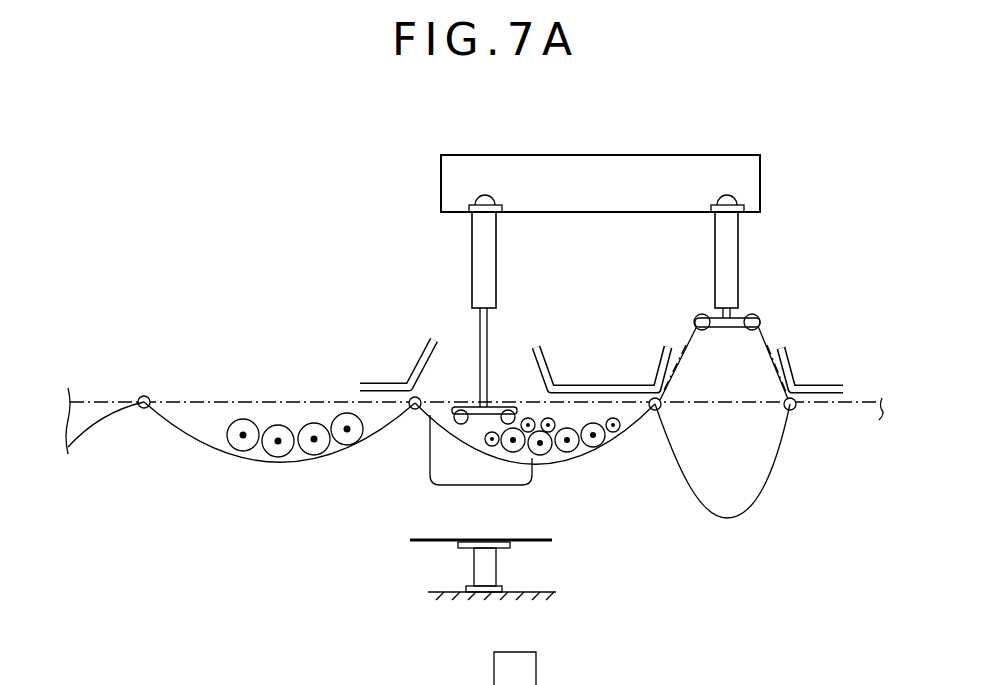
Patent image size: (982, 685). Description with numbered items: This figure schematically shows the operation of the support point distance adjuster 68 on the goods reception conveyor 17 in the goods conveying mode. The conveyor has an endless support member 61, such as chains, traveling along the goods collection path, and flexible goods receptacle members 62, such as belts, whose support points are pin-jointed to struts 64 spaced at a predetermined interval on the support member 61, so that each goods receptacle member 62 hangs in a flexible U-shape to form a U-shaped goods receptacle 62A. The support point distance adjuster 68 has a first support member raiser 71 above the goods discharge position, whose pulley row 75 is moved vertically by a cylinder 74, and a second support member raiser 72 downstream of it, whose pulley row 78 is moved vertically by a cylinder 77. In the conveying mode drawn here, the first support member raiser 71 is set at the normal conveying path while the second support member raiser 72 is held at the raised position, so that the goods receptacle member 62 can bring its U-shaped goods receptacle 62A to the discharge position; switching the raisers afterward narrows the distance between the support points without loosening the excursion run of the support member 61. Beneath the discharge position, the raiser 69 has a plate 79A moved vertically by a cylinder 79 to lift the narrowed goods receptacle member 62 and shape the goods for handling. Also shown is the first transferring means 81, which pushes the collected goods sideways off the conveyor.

The support point distance adjuster 68 is at (582, 172).
The cylinder 74 is at (480, 250).
The first support member raiser 71 is at (468, 285).
The cylinder 77 is at (722, 243).
The second support member raiser 72 is at (712, 276).
The pulley row 78 is at (760, 322).
The pulley row 75 is at (464, 402).
The goods reception conveyor 17 is at (222, 398).
The struts 64 is at (146, 395).
The support member 61 is at (287, 400).
The goods receptacle member 62 is at (196, 440).
The U-shaped goods receptacle 62A is at (303, 455).
The first transferring means 81 is at (540, 460).
The plate 79A is at (448, 539).
The cylinder 79 is at (478, 576).
The raiser 69 is at (514, 551).